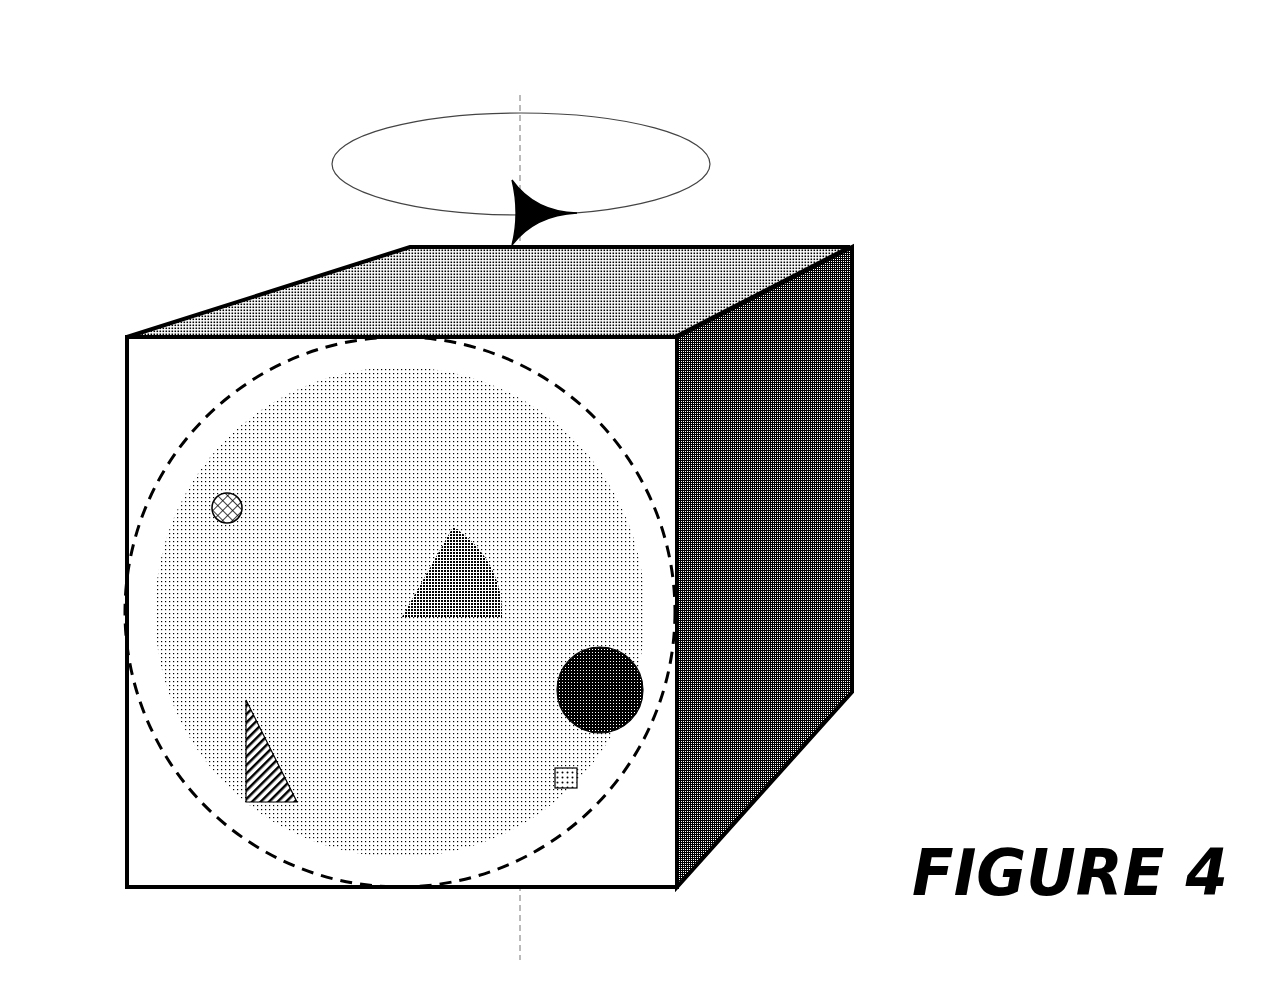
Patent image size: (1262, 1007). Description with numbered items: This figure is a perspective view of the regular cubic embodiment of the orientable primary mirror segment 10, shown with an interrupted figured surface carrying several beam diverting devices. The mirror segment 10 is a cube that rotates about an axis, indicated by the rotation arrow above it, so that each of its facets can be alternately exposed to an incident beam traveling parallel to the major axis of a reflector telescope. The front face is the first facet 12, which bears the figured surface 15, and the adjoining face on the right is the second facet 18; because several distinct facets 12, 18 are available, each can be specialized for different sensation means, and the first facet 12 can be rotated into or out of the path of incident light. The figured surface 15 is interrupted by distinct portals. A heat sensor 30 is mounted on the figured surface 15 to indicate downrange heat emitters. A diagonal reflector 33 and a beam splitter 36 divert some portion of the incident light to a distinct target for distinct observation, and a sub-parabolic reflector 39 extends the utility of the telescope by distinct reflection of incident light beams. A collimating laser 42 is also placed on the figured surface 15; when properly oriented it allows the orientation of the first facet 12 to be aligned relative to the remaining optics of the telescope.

The mirror segment 10 is at (452, 130).
The first facet 12 is at (648, 870).
The figured surface 15 is at (412, 831).
The second facet 18 is at (762, 732).
The heat sensor 30 is at (242, 520).
The diagonal reflector 33 is at (253, 748).
The beam splitter 36 is at (453, 605).
The sub-parabolic reflector 39 is at (598, 647).
The collimating laser 42 is at (555, 772).